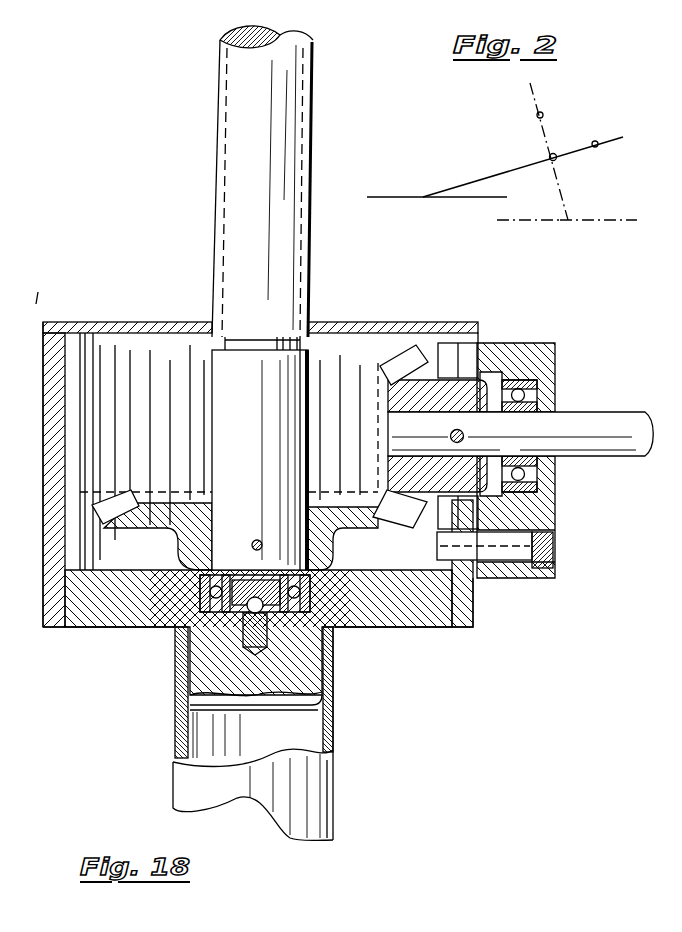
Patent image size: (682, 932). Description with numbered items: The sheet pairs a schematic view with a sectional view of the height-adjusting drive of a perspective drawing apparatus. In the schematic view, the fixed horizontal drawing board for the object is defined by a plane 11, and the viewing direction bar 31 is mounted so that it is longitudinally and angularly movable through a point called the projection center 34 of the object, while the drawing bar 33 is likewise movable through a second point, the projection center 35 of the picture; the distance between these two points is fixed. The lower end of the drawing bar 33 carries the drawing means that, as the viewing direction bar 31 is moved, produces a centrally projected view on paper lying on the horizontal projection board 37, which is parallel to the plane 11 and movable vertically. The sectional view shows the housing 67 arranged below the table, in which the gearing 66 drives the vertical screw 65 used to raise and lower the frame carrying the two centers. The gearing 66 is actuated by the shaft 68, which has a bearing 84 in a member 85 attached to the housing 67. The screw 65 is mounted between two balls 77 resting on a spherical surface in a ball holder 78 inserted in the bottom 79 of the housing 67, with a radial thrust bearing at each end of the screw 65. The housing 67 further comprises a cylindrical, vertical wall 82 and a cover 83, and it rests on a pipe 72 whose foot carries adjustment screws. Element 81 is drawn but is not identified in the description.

In FIG. 2, the plane 11 is at (395, 197).
In FIG. 2, the viewing direction bar 31 is at (508, 168).
In FIG. 2, the drawing bar 33 is at (569, 220).
In FIG. 2, the projection center of the object 34 is at (551, 156).
In FIG. 2, the projection center of the picture 35 is at (556, 157).
In FIG. 2, the projection board 37 is at (600, 220).
In FIG. 18, the screw 65 is at (229, 298).
In FIG. 18, the gearing 66 is at (368, 517).
In FIG. 18, the housing 67 is at (140, 617).
In FIG. 18, the shaft 68 is at (562, 437).
In FIG. 18, the pipe 72 is at (310, 782).
In FIG. 18, the balls 77 is at (177, 680).
In FIG. 18, the ball holder 78 is at (178, 716).
In FIG. 18, the bottom 79 is at (390, 618).
In FIG. 18, the housing bottom 81 is at (178, 625).
In FIG. 18, the cylindrical vertical wall 82 is at (97, 322).
In FIG. 18, the cover 83 is at (155, 322).
In FIG. 18, the bearing 84 is at (537, 388).
In FIG. 18, the member 85 is at (530, 355).